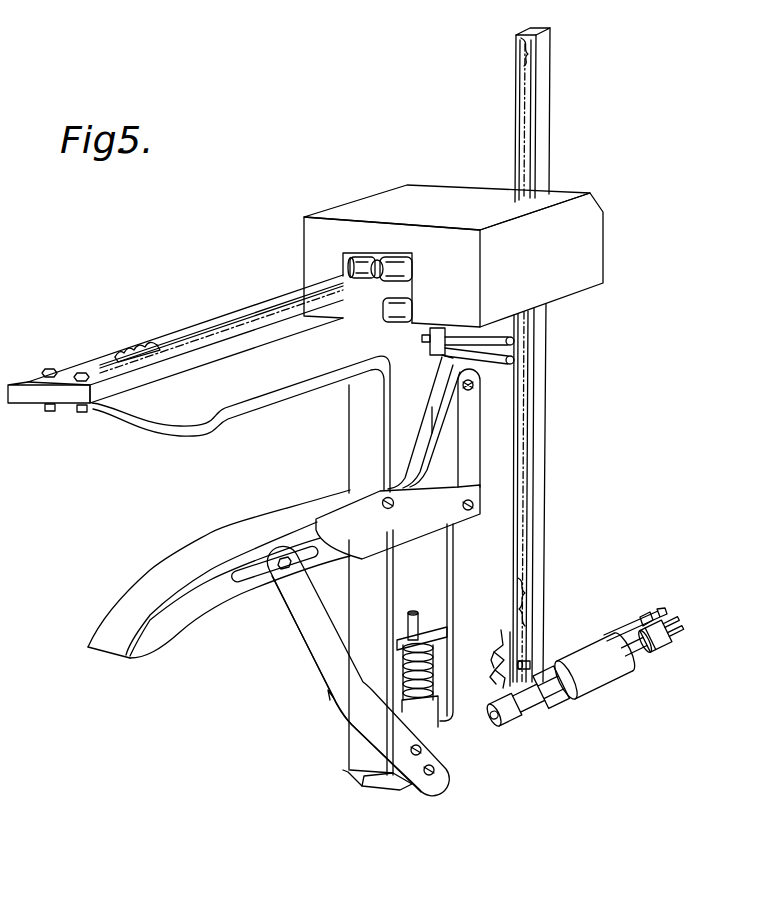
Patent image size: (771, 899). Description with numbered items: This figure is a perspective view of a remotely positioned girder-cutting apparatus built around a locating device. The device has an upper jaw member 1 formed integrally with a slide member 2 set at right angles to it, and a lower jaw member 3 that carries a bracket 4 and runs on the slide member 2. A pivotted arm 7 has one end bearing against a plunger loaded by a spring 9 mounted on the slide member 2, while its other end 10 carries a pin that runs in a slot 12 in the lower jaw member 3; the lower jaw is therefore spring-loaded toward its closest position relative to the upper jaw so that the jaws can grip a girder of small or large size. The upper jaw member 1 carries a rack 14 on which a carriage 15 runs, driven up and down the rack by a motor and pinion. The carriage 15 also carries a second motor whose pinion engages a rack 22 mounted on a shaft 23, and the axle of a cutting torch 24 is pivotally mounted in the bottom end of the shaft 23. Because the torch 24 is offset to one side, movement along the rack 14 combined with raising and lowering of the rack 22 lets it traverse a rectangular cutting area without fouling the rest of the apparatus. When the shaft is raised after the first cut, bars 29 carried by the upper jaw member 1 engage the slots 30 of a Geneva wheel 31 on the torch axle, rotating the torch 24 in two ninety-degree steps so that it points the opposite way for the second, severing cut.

The upper jaw member 1 is at (283, 403).
The slide member 2 is at (452, 557).
The lower jaw member 3 is at (288, 508).
The bracket 4 is at (479, 448).
The pivotted arm 7 is at (320, 647).
The spring 9 is at (433, 688).
The other end of arm 10 is at (270, 568).
The slot 12 is at (240, 580).
The rack 14 is at (165, 340).
The carriage 15 is at (442, 188).
The rack 22 is at (527, 610).
The shaft 23 is at (542, 504).
The cutting torch 24 is at (569, 716).
The bars 29 is at (514, 362).
The slots 30 is at (484, 653).
The Geneva wheel 31 is at (508, 637).